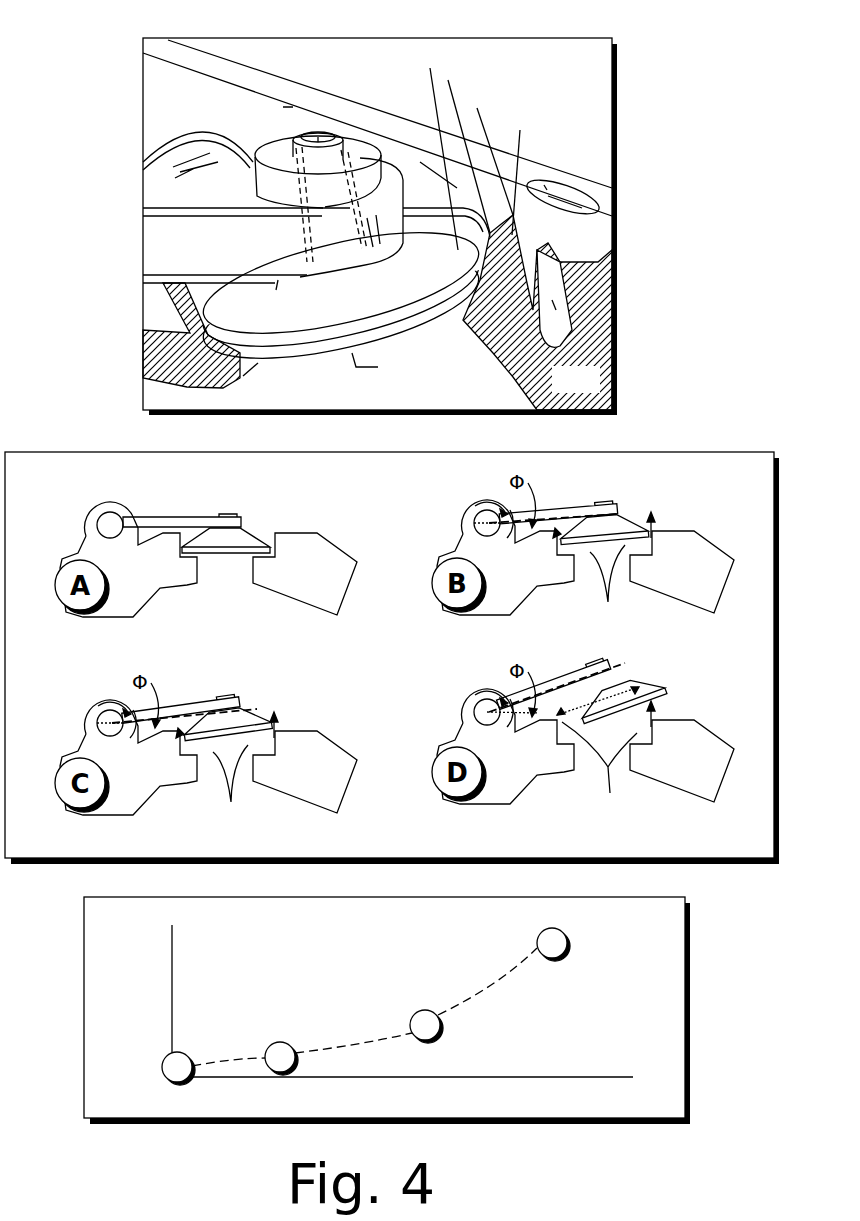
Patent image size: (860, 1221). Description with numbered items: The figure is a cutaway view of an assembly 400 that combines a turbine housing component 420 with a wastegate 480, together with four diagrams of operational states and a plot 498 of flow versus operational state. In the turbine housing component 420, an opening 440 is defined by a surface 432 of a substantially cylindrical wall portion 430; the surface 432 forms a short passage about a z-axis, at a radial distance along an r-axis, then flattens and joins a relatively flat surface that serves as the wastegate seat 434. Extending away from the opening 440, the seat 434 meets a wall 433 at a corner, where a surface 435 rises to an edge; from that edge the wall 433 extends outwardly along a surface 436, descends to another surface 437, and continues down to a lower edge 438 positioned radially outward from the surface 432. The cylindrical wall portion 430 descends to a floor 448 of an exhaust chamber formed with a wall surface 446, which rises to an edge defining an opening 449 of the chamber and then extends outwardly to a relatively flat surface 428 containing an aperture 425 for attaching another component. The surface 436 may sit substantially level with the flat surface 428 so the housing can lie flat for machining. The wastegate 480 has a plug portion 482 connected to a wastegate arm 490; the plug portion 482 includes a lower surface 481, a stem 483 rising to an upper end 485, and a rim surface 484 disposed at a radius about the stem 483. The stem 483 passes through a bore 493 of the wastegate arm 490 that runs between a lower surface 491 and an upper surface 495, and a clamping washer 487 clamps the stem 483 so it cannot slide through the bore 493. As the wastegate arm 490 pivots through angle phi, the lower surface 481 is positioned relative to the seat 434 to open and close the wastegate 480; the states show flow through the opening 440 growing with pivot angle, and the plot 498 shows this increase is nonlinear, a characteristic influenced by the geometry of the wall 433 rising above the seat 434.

The assembly 400 is at (599, 70).
The turbine housing component 420 is at (592, 391).
The aperture 425 is at (577, 188).
The relatively flat surface 428 is at (304, 97).
The substantially cylindrical wall portion 430 is at (220, 370).
The surface 432 is at (450, 320).
The wall 433 is at (492, 352).
The wastegate seat 434 is at (448, 80).
The surface 435 is at (430, 68).
The surface 436 is at (477, 108).
The surface 437 is at (520, 130).
The lower edge 438 is at (513, 388).
The opening 440 is at (470, 318).
The wall surface 446 is at (583, 288).
The floor 448 is at (543, 320).
The opening 449 is at (319, 134).
The wastegate 480 is at (228, 105).
The lower surface 481 is at (318, 353).
The plug portion 482 is at (363, 306).
The stem 483 is at (336, 142).
The rim surface 484 is at (450, 297).
The upper end 485 is at (328, 134).
The clamping washer 487 is at (277, 157).
The wastegate arm 490 is at (190, 256).
The lower surface 491 is at (278, 280).
The bore 493 is at (302, 230).
The upper surface 495 is at (226, 203).
The plot 498 is at (141, 936).